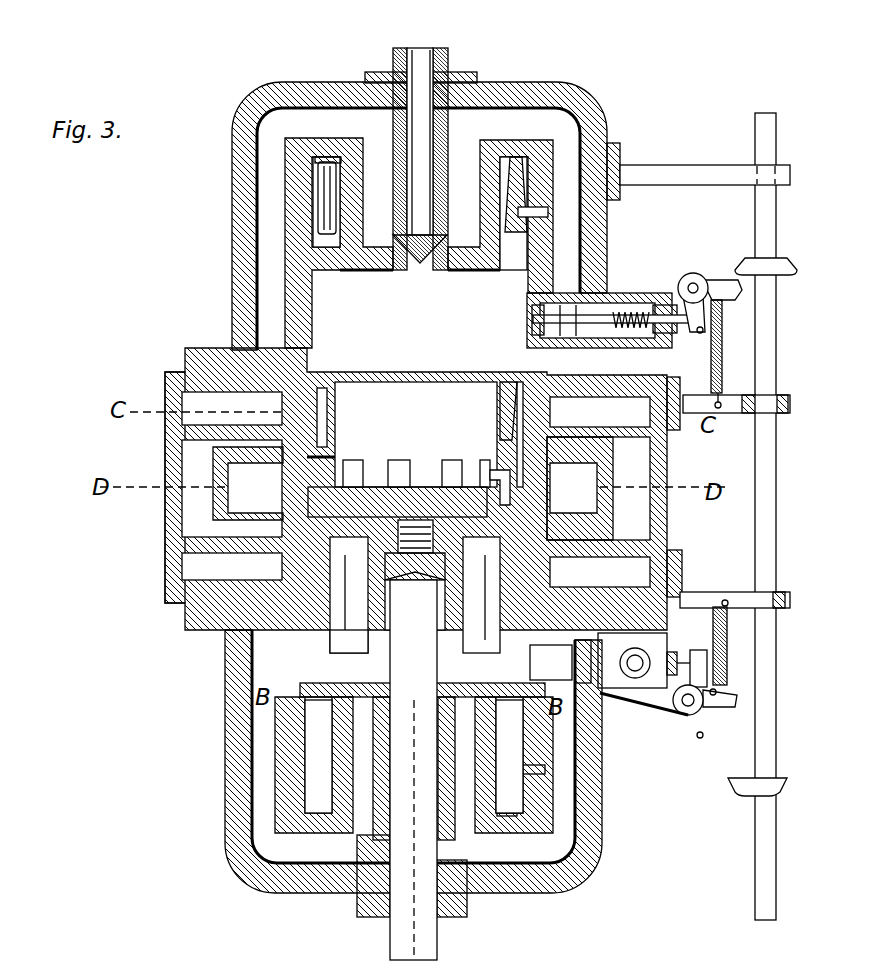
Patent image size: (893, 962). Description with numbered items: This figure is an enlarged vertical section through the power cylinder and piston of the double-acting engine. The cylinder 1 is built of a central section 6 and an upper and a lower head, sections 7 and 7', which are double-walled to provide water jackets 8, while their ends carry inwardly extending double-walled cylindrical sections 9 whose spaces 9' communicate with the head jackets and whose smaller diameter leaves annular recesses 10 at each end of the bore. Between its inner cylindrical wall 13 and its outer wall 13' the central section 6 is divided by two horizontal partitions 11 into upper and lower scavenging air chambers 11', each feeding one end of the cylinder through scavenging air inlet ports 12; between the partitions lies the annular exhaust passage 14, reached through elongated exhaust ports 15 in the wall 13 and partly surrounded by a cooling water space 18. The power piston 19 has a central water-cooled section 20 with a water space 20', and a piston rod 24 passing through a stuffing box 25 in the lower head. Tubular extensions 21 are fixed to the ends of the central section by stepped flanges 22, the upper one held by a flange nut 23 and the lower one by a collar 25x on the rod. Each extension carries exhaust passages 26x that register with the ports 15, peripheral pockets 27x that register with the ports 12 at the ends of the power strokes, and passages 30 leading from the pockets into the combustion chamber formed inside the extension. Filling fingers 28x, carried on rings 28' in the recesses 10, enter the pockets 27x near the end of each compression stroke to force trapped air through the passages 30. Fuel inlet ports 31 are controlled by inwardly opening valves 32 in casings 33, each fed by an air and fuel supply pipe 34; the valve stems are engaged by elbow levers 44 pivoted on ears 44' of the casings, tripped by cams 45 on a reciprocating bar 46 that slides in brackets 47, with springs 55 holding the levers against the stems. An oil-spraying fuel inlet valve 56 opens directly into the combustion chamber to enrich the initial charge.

The power cylinder 1 is at (402, 472).
The central section 6 is at (165, 520).
The upper cylindrical section 7 is at (396, 216).
The lower cylindrical section 7' is at (391, 761).
The water jackets 8 is at (270, 276).
The double-walled cylindrical sections 9 is at (349, 489).
The spaces or jackets 9' is at (500, 175).
The annular recesses 10 is at (326, 240).
The horizontal partitions 11 is at (412, 503).
The scavenging air chambers 11' is at (403, 498).
The scavenging air inlet ports 12 is at (520, 445).
The inner cylindrical wall 13 is at (338, 400).
The outer wall 13' is at (429, 488).
The annular exhaust passage 14 is at (580, 488).
The exhaust ports 15 is at (248, 483).
The water space 18 is at (182, 500).
The power piston 19 is at (344, 597).
The central water cooled section 20 is at (266, 659).
The water space 20' is at (478, 597).
The tubular extensions or sleeves 21 is at (395, 395).
The stepped flanges 22 is at (397, 572).
The flange nut 23 is at (420, 500).
The piston rod 24 is at (476, 942).
The stuffing box 25 is at (365, 890).
The annular flange or collar 25x is at (400, 690).
The exhaust ports or passages 26x is at (352, 475).
The recesses or pockets 27x is at (508, 385).
The rings 28' is at (443, 491).
The filling pieces or fingers 28x is at (326, 193).
The ports or passages 30 is at (495, 468).
The fuel inlet ports 31 is at (530, 312).
The inwardly opening valves 32 is at (533, 320).
The valve casings 33 is at (612, 295).
The air and fuel supply pipe 34 is at (644, 655).
The elbow levers 44 is at (709, 482).
The ears 44' is at (704, 484).
The trip cams 45 is at (795, 262).
The vertically reciprocating bar 46 is at (776, 383).
The brackets 47 is at (790, 175).
The springs 55 is at (722, 345).
The fuel inlet valves 56 is at (418, 262).